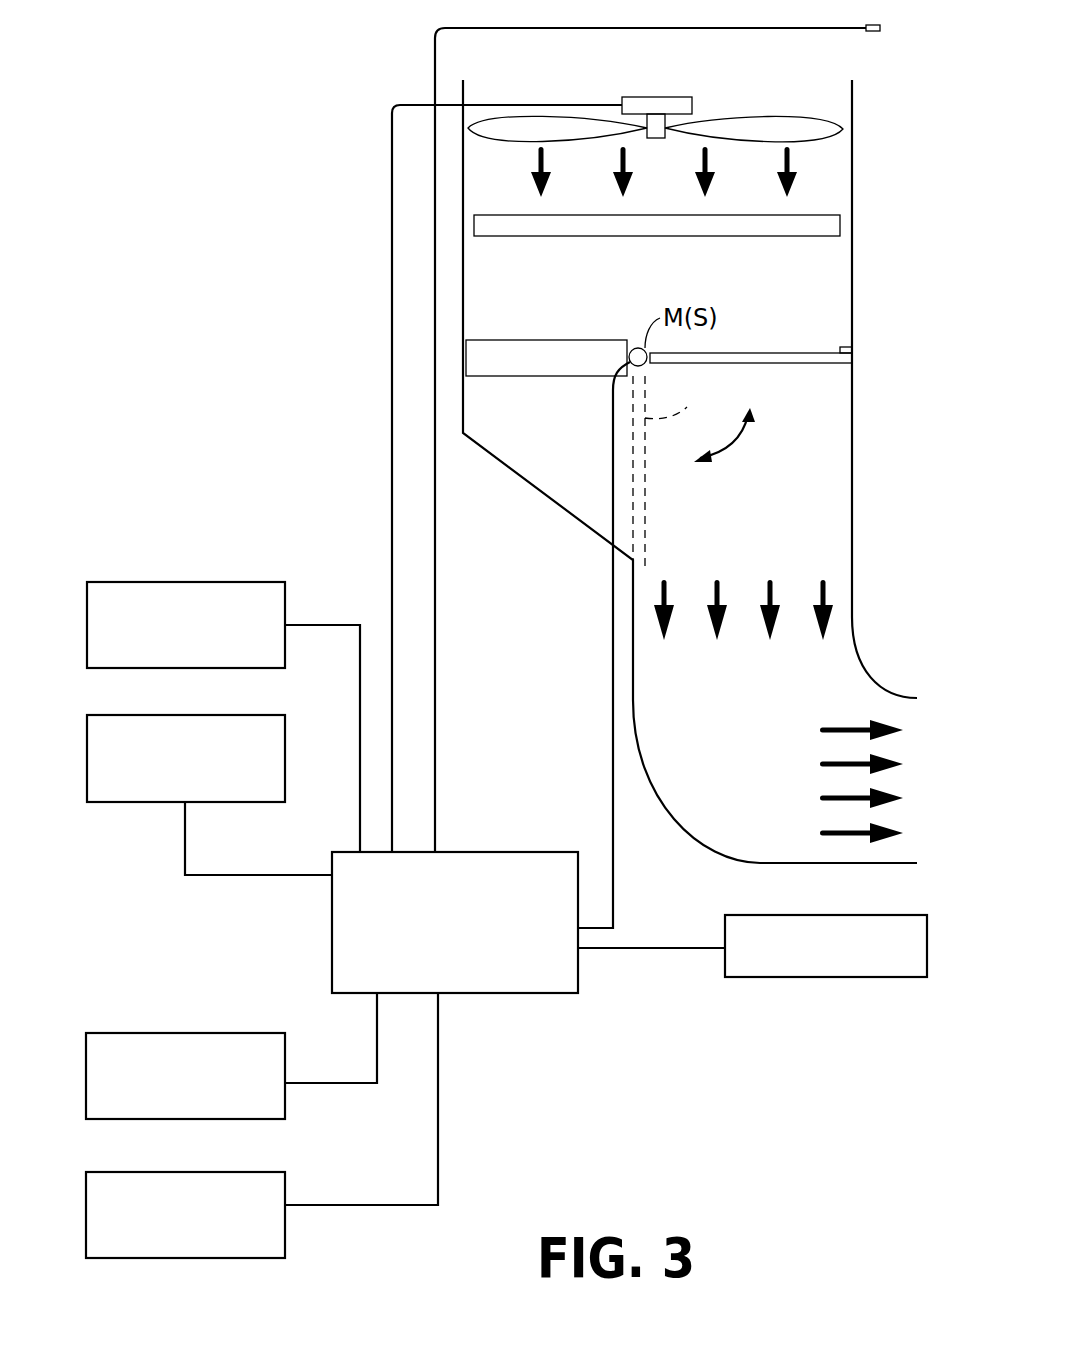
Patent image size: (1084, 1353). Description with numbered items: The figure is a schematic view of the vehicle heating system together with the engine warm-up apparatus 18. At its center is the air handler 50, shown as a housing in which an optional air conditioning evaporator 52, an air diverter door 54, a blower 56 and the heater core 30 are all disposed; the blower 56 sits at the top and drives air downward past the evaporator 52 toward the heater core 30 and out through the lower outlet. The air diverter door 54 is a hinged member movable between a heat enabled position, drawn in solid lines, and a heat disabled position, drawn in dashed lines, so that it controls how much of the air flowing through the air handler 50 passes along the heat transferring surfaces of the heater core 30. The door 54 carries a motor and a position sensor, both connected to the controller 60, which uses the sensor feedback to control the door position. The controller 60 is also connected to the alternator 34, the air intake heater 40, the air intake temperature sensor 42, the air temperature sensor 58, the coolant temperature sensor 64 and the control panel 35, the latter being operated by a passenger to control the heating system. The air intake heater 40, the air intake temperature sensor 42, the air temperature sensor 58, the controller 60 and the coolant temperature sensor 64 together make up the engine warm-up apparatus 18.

The engine warm-up apparatus 18 is at (288, 278).
The heater core 30 is at (551, 340).
The alternator 34 is at (237, 582).
The control panel 35 is at (810, 978).
The air intake heater 40 is at (285, 757).
The air intake temperature sensor 42 is at (285, 1068).
The air handler 50 is at (852, 452).
The air conditioning evaporator 52 is at (773, 237).
The air diverter door 54 is at (733, 363).
The blower 56 is at (665, 99).
The air temperature sensor 58 is at (872, 25).
The controller 60 is at (472, 868).
The coolant temperature sensor 64 is at (285, 1190).